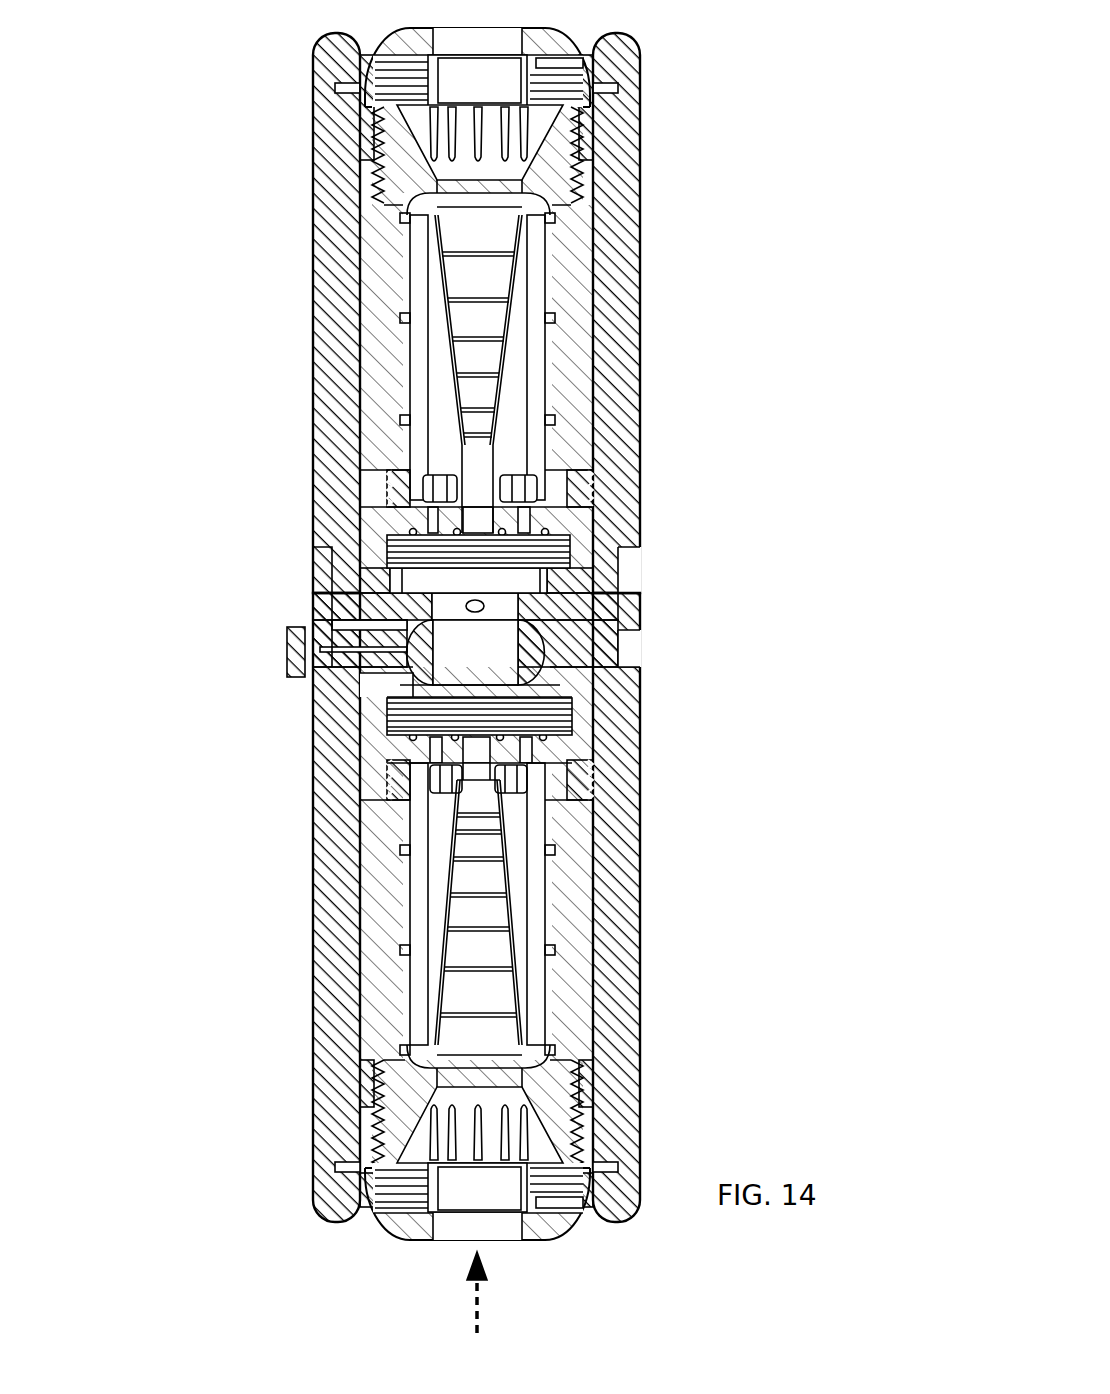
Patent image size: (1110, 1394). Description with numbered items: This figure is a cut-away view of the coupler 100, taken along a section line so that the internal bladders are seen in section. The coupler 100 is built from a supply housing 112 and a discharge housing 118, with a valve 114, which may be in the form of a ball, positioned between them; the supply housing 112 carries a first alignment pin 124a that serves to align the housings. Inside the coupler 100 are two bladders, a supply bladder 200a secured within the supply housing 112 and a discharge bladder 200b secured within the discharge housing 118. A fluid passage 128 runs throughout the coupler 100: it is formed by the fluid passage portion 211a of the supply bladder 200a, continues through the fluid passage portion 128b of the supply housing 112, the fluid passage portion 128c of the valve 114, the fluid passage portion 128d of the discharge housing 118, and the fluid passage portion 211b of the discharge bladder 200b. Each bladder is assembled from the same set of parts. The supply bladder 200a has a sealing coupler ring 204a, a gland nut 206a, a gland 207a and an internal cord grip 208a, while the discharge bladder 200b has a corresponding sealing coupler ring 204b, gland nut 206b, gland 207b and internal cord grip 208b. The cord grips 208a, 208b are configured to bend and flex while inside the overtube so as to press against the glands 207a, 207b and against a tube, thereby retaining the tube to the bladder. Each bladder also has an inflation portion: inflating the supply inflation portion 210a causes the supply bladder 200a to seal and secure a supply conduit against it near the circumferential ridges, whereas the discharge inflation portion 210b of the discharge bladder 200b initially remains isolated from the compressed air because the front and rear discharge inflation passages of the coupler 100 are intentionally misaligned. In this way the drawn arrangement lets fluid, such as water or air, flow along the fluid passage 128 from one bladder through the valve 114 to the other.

The coupler 100 is at (238, 498).
The supply housing 112 is at (642, 940).
The valve 114 is at (290, 645).
The discharge housing 118 is at (643, 320).
The first alignment pin 124a is at (432, 603).
The fluid passage 128 is at (482, 1296).
The fluid passage portion of supply housing 128b is at (530, 683).
The fluid passage portion of valve 128c is at (488, 643).
The fluid passage portion of discharge housing 128d is at (520, 580).
The supply bladder 200a is at (372, 999).
The discharge bladder 200b is at (372, 267).
The sealing coupler ring 204a is at (373, 740).
The sealing coupler ring 204b is at (577, 491).
The gland nut 206a is at (390, 1234).
The gland nut 206b is at (552, 30).
The gland 207a is at (462, 1184).
The gland 207b is at (483, 78).
The internal cord grip 208a is at (507, 1128).
The internal cord grip 208b is at (455, 137).
The supply inflation portion 210a is at (525, 848).
The discharge inflation portion 210b is at (425, 333).
The fluid passage portion of supply bladder 211a is at (468, 875).
The fluid passage portion of discharge bladder 211b is at (490, 226).